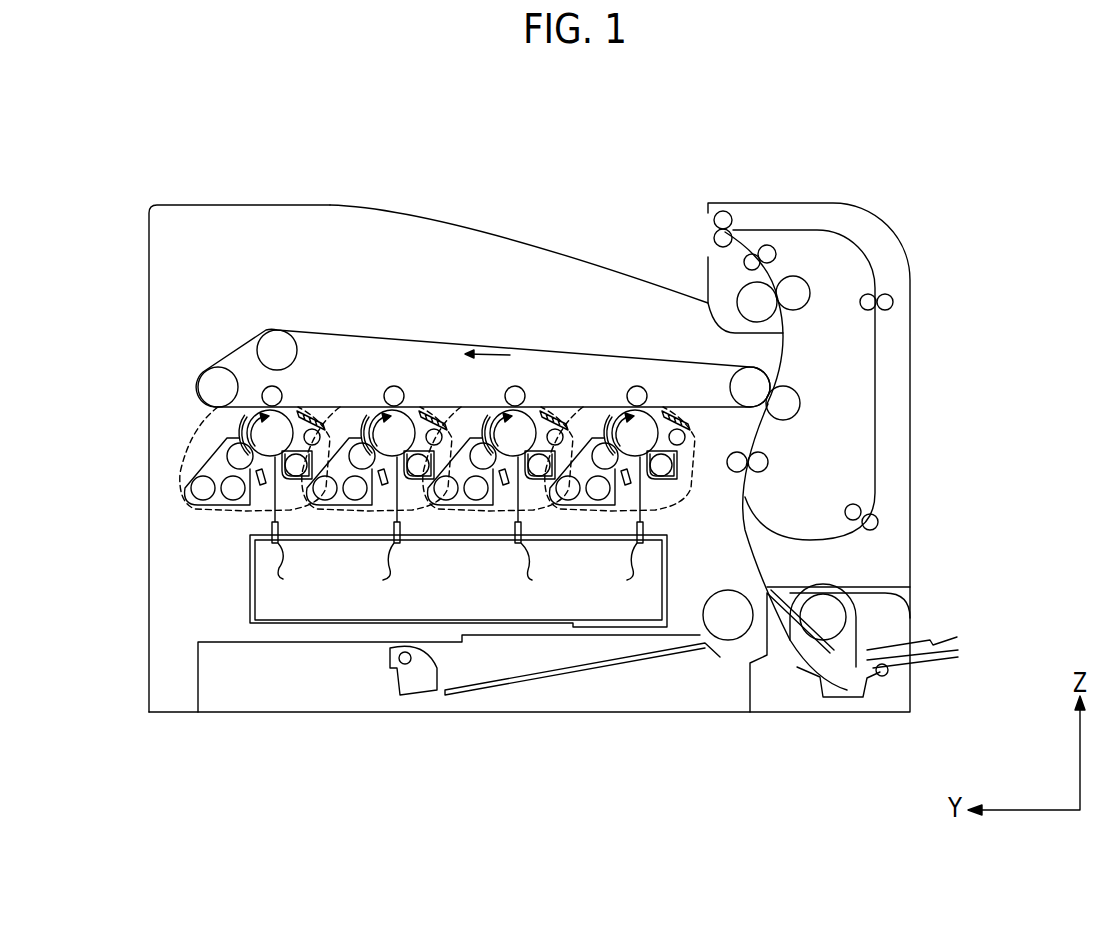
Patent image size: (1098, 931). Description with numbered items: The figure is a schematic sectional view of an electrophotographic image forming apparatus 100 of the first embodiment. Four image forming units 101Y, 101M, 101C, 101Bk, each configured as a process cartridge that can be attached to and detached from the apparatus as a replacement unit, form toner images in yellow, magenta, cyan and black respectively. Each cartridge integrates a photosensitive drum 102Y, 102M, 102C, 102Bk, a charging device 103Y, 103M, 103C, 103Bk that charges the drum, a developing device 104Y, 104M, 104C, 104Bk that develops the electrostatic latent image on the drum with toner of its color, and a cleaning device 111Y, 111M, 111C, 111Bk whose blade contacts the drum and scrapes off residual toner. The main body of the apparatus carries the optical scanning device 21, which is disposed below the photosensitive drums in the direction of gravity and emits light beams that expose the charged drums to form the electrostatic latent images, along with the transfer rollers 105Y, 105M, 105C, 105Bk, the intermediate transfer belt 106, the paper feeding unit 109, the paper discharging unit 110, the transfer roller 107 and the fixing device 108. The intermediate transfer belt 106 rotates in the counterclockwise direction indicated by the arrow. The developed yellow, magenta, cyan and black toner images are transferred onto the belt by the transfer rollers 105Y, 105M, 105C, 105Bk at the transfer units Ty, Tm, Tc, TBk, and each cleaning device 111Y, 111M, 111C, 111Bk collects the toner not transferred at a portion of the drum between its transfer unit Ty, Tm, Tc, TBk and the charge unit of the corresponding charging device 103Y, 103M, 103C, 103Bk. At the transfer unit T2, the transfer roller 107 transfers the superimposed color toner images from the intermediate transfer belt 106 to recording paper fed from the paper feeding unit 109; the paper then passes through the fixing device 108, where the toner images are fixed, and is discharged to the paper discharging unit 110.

The image forming apparatus 100 is at (757, 192).
The optical scanning device 21 is at (250, 587).
The image forming unit 101Y is at (185, 500).
The image forming unit 101M is at (325, 510).
The image forming unit 101C is at (567, 445).
The image forming unit 101Bk is at (720, 492).
The photosensitive drum 102Y is at (247, 430).
The photosensitive drum 102M is at (412, 415).
The photosensitive drum 102C is at (525, 410).
The photosensitive drum 102Bk is at (658, 412).
The charging device 103Y is at (333, 445).
The charging device 103M is at (410, 445).
The charging device 103C is at (540, 462).
The charging device 103Bk is at (678, 462).
The developing device 104Y is at (200, 455).
The developing device 104M is at (345, 447).
The developing device 104C is at (465, 460).
The developing device 104Bk is at (638, 507).
The transfer roller 105Y is at (266, 388).
The transfer roller 105M is at (388, 388).
The transfer roller 105C is at (514, 387).
The transfer roller 105Bk is at (640, 387).
The intermediate transfer belt 106 is at (373, 343).
The transfer roller 107 is at (803, 400).
The fixing device 108 is at (802, 278).
The paper feeding unit 109 is at (562, 675).
The paper discharging unit 110 is at (497, 224).
The cleaning device 111Y is at (318, 432).
The cleaning device 111M is at (438, 430).
The cleaning device 111C is at (556, 432).
The cleaning device 111Bk is at (682, 435).
The transfer unit T2 is at (775, 394).
The transfer unit Ty is at (280, 400).
The transfer unit Tm is at (382, 403).
The transfer unit Tc is at (500, 404).
The transfer unit TBk is at (632, 404).